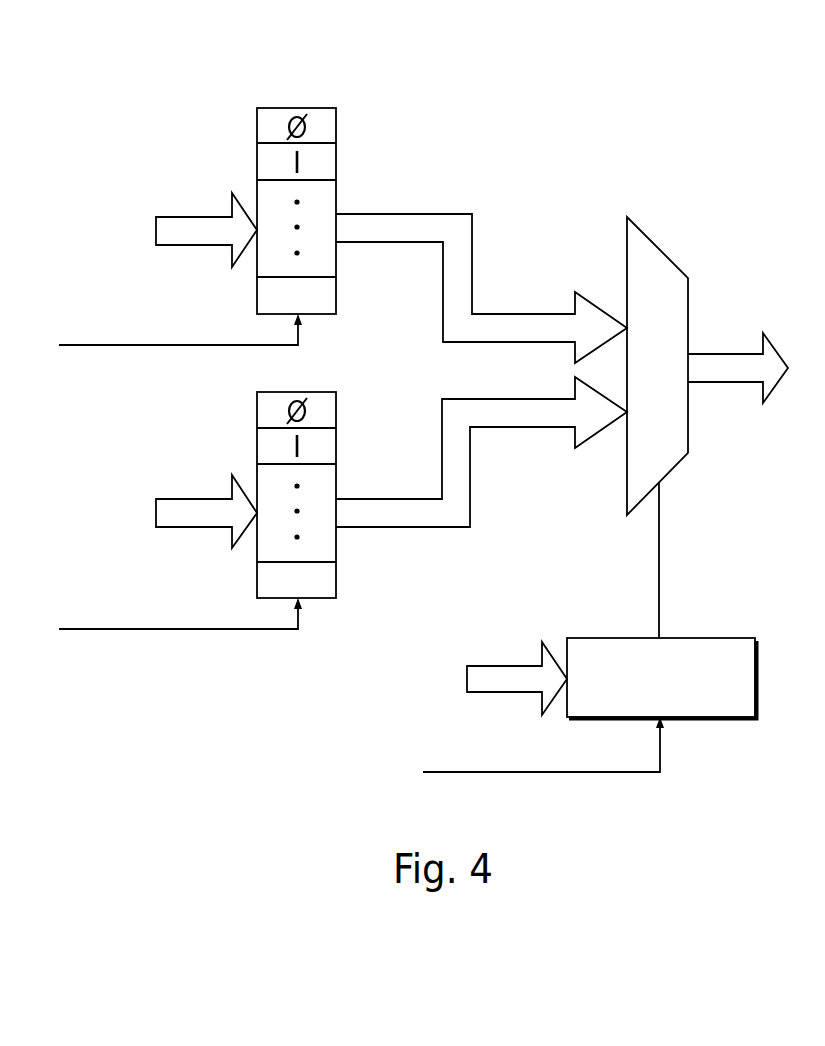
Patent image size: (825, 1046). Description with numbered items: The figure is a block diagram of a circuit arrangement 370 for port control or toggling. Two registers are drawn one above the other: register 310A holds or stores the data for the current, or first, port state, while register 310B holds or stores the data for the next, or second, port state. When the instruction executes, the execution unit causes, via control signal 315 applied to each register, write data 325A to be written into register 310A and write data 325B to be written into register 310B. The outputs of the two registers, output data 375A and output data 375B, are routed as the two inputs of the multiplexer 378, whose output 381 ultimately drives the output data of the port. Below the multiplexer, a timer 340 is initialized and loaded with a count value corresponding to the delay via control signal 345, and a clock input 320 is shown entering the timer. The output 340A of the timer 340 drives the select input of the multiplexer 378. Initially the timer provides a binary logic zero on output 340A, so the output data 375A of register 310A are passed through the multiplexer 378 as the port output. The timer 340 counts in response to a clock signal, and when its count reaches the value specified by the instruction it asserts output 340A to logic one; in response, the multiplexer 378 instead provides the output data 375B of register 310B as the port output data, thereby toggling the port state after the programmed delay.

The circuit arrangement 370 is at (566, 66).
The register 310A is at (297, 107).
The register 310B is at (297, 391).
The write data 325A is at (200, 225).
The write data 325B is at (195, 503).
The output data 375A is at (357, 212).
The output data 375B is at (348, 498).
The control signal 315 is at (130, 345).
The multiplexer 378 is at (661, 250).
The multiplexer output 381 is at (703, 352).
The output 340A is at (661, 518).
The timer 340 is at (694, 638).
The control signal 345 is at (508, 675).
The timer clock signal 320 is at (492, 772).